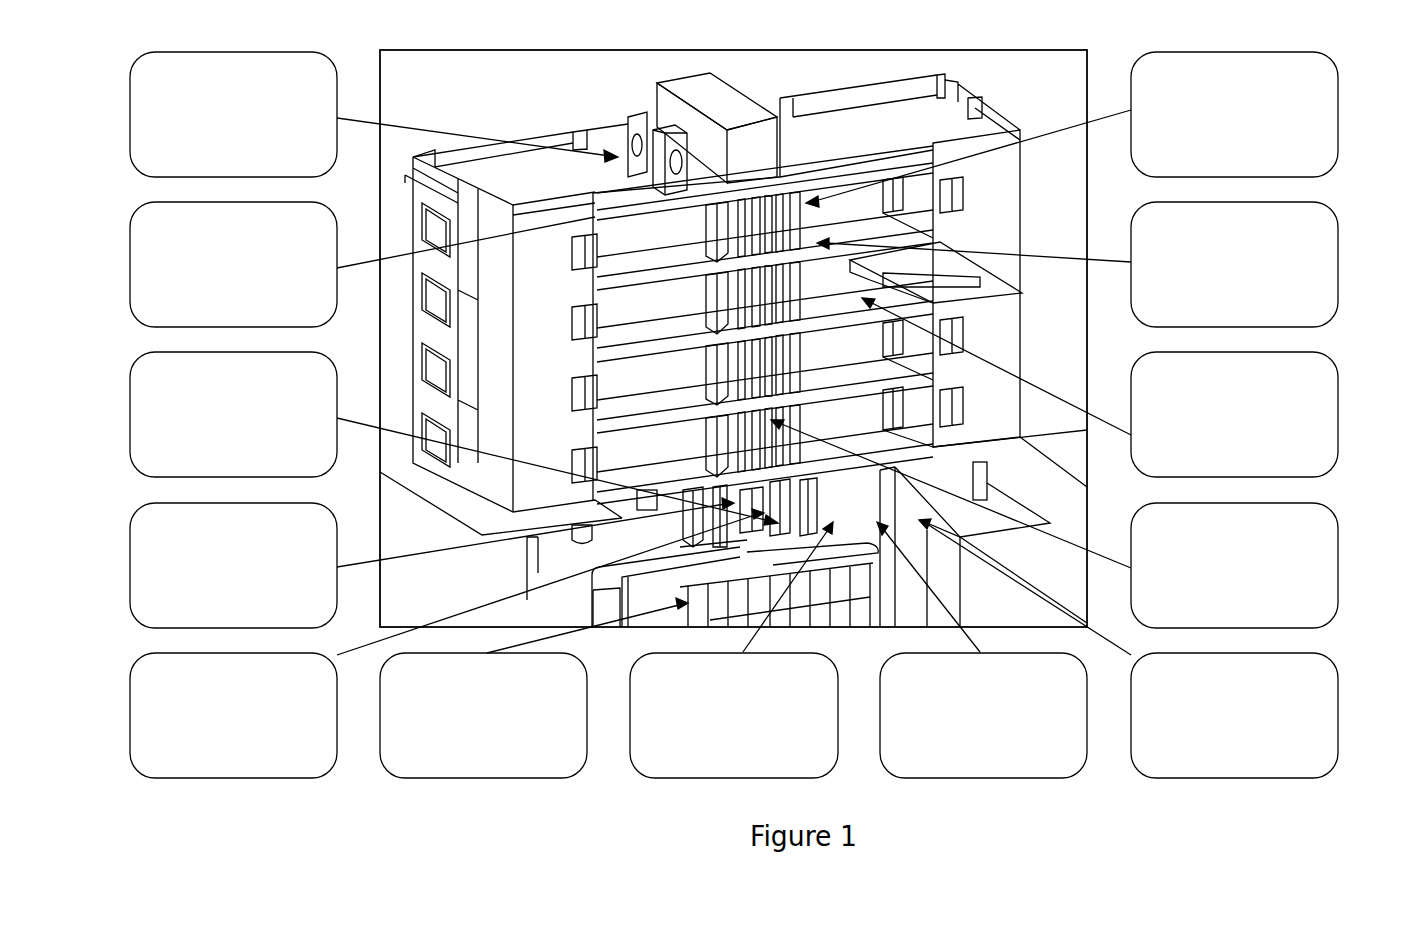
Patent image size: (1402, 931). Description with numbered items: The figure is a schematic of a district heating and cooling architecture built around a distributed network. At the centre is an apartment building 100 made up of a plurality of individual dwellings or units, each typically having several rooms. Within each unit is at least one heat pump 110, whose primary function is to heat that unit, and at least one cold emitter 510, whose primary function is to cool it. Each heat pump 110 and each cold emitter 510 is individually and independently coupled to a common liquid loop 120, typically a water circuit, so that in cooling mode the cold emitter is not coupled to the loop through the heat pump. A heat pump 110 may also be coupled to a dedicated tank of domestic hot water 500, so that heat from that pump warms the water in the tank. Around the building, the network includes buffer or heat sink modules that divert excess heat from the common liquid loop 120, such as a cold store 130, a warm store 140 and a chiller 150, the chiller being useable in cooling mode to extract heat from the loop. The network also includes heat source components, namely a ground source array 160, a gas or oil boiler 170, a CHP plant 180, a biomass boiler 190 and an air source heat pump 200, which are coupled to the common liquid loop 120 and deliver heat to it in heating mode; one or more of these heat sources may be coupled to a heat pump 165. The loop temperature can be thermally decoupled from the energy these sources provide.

The apartment building 100 is at (1045, 41).
The heat pump 110 is at (1327, 122).
The common liquid loop 120 is at (1325, 555).
The cold store 130 is at (150, 583).
The warm store 140 is at (136, 718).
The chiller 150 is at (131, 255).
The ground source array 160 is at (478, 770).
The heat pump 165 is at (131, 417).
The gas or oil boiler 170 is at (708, 760).
The CHP plant 180 is at (990, 762).
The biomass boiler 190 is at (1325, 712).
The air source heat pump 200 is at (130, 125).
The tank of domestic hot water 500 is at (1325, 268).
The cold emitter 510 is at (1325, 447).